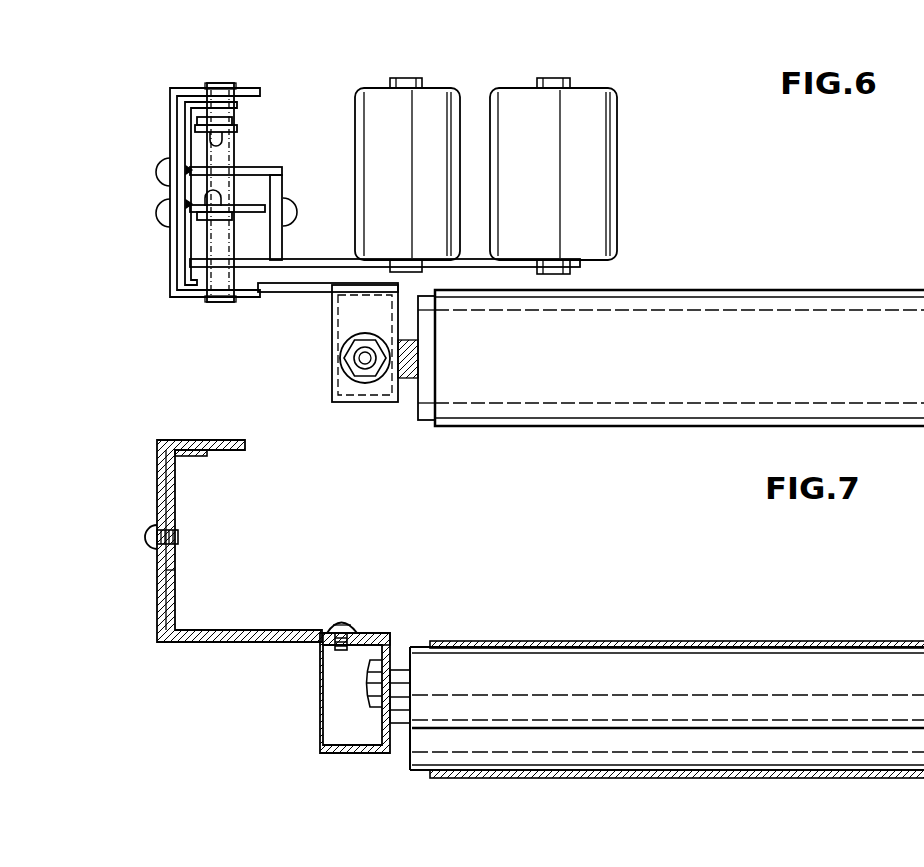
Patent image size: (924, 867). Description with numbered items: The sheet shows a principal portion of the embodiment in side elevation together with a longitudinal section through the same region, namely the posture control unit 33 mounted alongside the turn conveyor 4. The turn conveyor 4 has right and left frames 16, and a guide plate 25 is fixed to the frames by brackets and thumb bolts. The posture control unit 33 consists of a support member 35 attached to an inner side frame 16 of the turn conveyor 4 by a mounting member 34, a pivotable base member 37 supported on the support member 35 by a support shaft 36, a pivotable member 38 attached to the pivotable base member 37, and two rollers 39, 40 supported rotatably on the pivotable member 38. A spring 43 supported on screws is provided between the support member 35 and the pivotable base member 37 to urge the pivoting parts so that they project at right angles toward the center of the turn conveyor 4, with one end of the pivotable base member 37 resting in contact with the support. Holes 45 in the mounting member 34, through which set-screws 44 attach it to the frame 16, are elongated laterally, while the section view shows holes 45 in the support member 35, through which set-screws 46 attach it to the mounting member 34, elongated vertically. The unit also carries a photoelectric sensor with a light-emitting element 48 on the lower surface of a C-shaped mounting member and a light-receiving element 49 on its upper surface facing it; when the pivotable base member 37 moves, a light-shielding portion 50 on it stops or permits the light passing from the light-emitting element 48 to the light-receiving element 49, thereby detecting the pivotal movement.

In FIG. 6, the turn conveyor 4 is at (766, 312).
In FIG. 7, the turn conveyor 4 is at (753, 645).
In FIG. 6, the frame 16 is at (342, 387).
In FIG. 7, the frame 16 is at (345, 753).
In FIG. 6, the guide plate 25 is at (197, 120).
In FIG. 6, the posture control unit 33 is at (313, 106).
In FIG. 6, the mounting member 34 is at (317, 293).
In FIG. 7, the mounting member 34 is at (225, 643).
In FIG. 6, the support member 35 is at (186, 126).
In FIG. 7, the support member 35 is at (231, 443).
In FIG. 6, the support shaft 36 is at (222, 107).
In FIG. 6, the pivotable base member 37 is at (262, 267).
In FIG. 6, the pivotable member 38 is at (315, 260).
In FIG. 6, the roller 39 is at (592, 110).
In FIG. 6, the roller 40 is at (430, 108).
In FIG. 6, the spring 43 is at (197, 217).
In FIG. 7, the set-screw 44 is at (346, 622).
In FIG. 7, the hole 45 is at (163, 515).
In FIG. 6, the set-screw 46 is at (96, 143).
In FIG. 7, the set-screw 46 is at (148, 537).
In FIG. 6, the light-emitting element 48 is at (203, 200).
In FIG. 6, the light-receiving element 49 is at (200, 137).
In FIG. 6, the light-shielding portion 50 is at (210, 168).